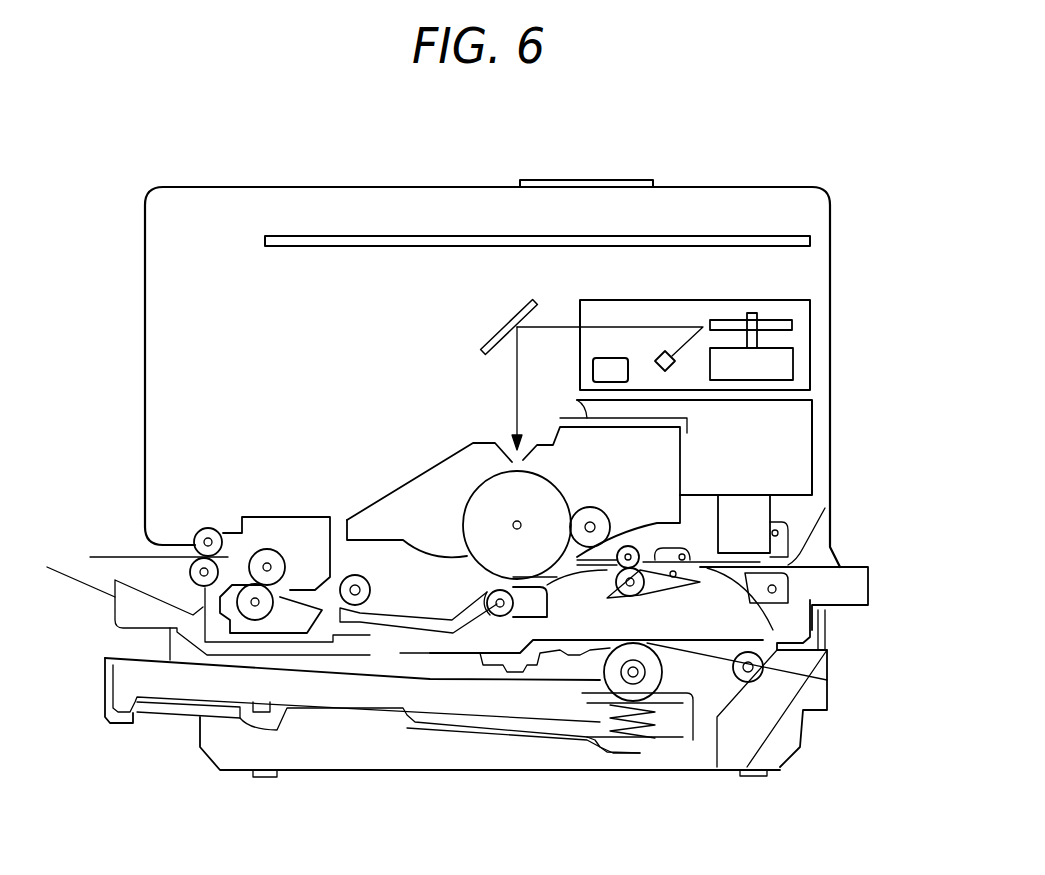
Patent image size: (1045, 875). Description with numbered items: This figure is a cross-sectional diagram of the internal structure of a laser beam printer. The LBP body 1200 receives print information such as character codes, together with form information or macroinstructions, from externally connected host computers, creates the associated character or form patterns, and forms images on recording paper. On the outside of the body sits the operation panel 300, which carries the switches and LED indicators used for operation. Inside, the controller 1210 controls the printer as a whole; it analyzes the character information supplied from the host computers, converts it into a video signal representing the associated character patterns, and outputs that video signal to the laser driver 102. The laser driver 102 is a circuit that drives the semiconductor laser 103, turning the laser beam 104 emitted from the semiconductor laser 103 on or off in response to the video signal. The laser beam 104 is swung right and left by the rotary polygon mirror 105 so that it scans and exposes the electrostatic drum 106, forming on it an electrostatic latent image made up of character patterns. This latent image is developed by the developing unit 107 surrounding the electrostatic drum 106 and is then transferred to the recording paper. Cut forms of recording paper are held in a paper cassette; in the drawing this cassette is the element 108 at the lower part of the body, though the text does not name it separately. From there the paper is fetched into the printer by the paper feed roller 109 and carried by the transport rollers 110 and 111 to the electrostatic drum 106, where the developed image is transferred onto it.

The LBP body 1200 is at (753, 186).
The controller 1210 is at (812, 237).
The operation panel 300 is at (600, 180).
The laser driver 102 is at (593, 366).
The semiconductor laser 103 is at (673, 369).
The laser beam 104 is at (643, 327).
The rotary polygon mirror 105 is at (792, 325).
The electrostatic drum 106 is at (480, 482).
The developing unit 107 is at (377, 510).
The paper feed tray 108 is at (105, 712).
The paper feed roller 109 is at (607, 675).
The transport roller 110 is at (763, 666).
The transport roller 111 is at (630, 600).